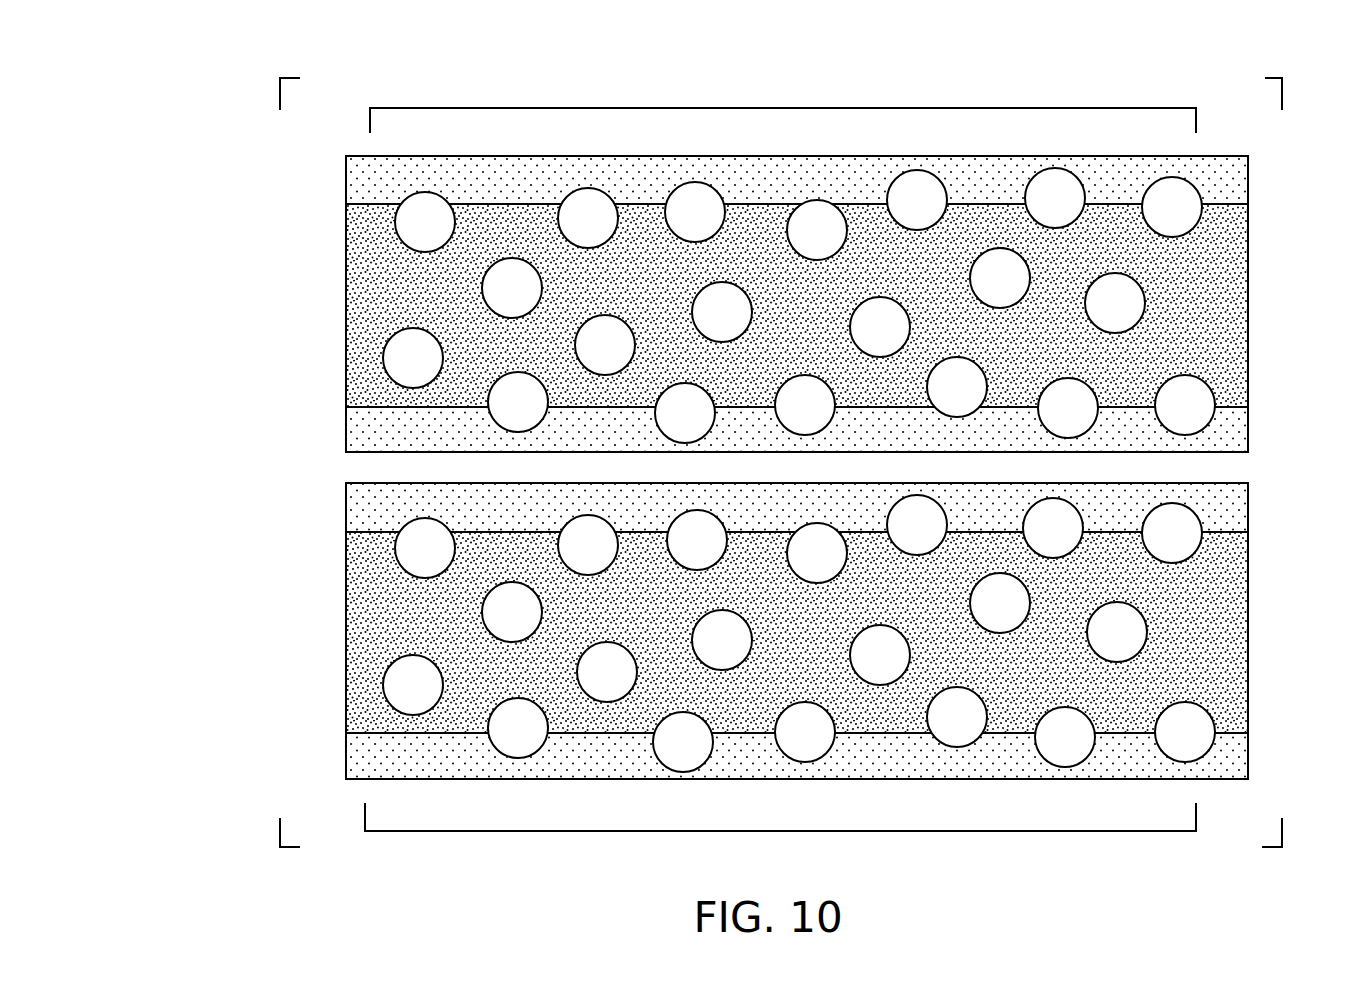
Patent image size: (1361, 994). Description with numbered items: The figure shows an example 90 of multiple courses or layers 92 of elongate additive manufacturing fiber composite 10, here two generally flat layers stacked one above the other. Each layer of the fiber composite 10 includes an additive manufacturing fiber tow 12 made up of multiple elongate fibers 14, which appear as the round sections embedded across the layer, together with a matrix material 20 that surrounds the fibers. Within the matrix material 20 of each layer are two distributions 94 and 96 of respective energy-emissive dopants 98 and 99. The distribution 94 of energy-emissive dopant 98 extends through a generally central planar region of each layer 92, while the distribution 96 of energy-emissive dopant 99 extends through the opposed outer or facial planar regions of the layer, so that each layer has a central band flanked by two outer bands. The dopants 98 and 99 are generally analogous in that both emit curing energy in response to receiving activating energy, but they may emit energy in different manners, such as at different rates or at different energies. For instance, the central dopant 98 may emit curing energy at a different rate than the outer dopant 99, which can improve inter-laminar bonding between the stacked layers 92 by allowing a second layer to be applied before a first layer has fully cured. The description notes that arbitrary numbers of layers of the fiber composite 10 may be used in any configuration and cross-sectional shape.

The elongate additive manufacturing fiber composite 10 is at (197, 92).
The additive manufacturing fiber tow 12 is at (765, 107).
The elongate fibers 14 is at (683, 187).
The matrix material 20 is at (346, 185).
The example of multiple courses or layers of elongate additive manufacturing fiber c 90 is at (280, 97).
The courses or layers 92 is at (325, 452).
The distribution of energy-emissive dopant 94 is at (845, 468).
The distribution of energy-emissive dopant 96 is at (769, 457).
The energy-emissive dopant 98 is at (1261, 407).
The energy-emissive dopant 99 is at (1230, 187).